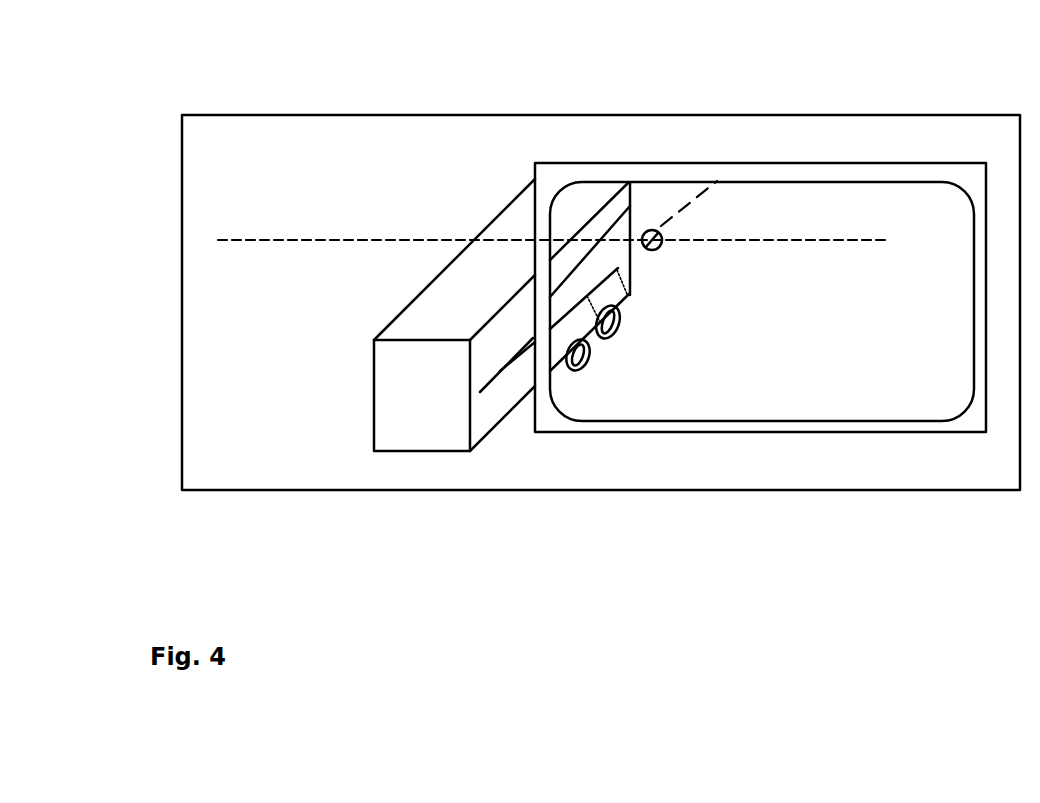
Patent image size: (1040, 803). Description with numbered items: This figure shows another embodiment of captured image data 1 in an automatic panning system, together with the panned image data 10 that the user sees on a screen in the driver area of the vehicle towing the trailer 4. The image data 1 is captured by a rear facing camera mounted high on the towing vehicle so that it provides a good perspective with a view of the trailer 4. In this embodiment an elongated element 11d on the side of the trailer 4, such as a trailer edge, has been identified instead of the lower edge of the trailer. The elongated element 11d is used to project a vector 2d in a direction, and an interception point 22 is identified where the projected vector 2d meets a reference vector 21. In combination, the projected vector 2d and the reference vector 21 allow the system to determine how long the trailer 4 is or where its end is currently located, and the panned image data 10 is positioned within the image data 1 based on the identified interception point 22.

The image data 1 is at (383, 114).
The panned image data 10 is at (897, 162).
The trailer 4 is at (468, 298).
The elongated element 11d is at (533, 382).
The reference vector 21 is at (788, 243).
The interception point 22 is at (655, 251).
The projected vector 2d is at (708, 185).